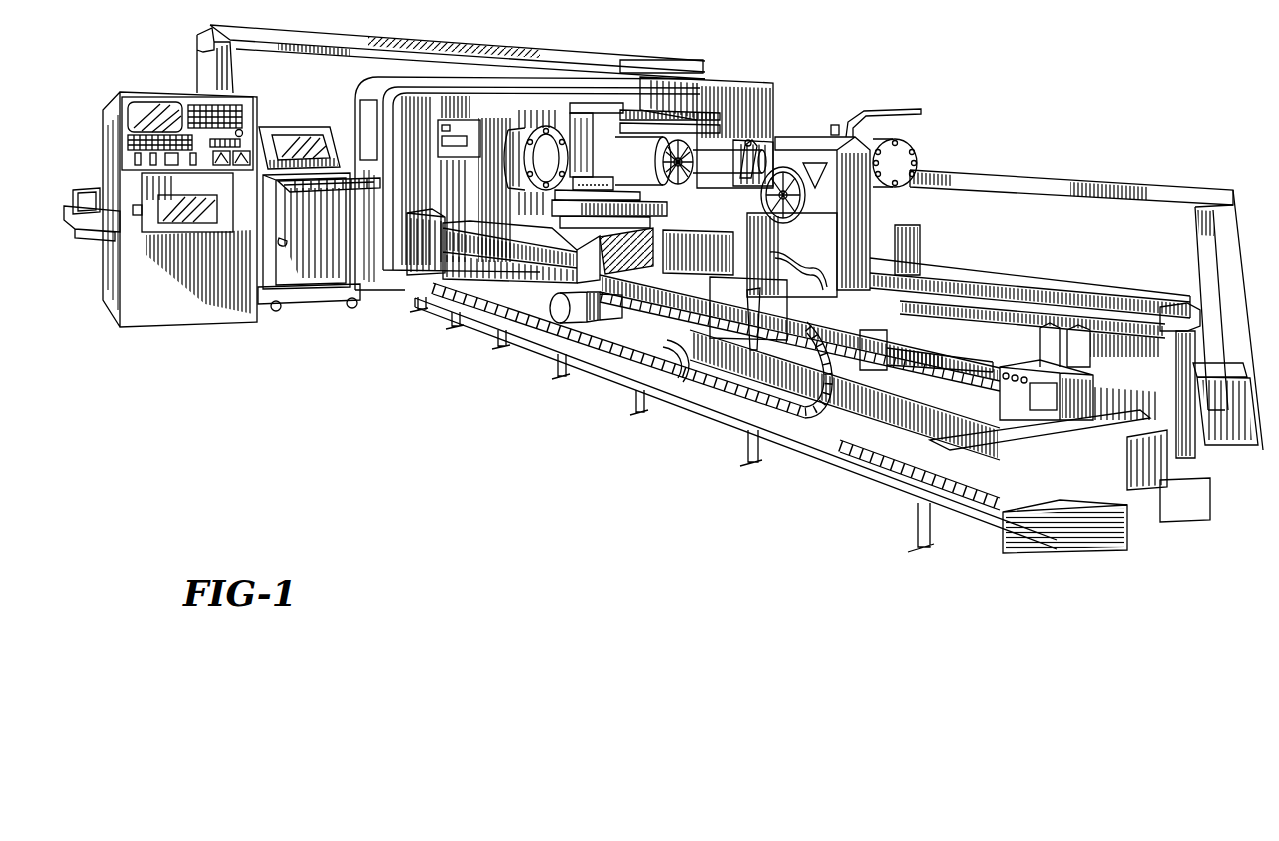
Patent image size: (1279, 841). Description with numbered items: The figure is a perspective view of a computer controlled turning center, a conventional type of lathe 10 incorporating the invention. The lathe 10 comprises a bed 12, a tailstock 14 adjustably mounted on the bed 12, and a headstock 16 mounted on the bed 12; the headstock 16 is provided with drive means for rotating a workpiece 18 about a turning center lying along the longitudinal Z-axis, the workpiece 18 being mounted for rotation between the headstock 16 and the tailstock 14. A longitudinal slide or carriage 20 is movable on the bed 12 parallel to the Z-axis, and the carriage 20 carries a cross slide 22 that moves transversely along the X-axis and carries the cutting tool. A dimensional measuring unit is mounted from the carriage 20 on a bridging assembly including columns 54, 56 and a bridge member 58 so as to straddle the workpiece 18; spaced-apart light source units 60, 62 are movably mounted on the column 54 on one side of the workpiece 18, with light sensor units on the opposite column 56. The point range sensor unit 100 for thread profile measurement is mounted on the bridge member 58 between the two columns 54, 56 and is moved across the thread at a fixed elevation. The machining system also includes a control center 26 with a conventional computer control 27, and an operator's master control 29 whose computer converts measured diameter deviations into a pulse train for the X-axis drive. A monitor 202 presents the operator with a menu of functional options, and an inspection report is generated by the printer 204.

The lathe 10 is at (1041, 134).
The bed 12 is at (942, 253).
The tailstock 14 is at (818, 128).
The headstock 16 is at (514, 95).
The workpiece 18 is at (665, 127).
The carriage 20 is at (643, 328).
The cross slide 22 is at (550, 226).
The control center 26 is at (303, 348).
The computer control 27 is at (183, 82).
The operator's master control 29 is at (268, 118).
The column 54 is at (571, 120).
The column 56 is at (702, 152).
The bridge member 58 is at (698, 128).
The light source unit 60 is at (618, 128).
The light source unit 62 is at (636, 203).
The point range sensor unit 100 is at (628, 88).
The monitor 202 is at (306, 138).
The printer 204 is at (84, 186).